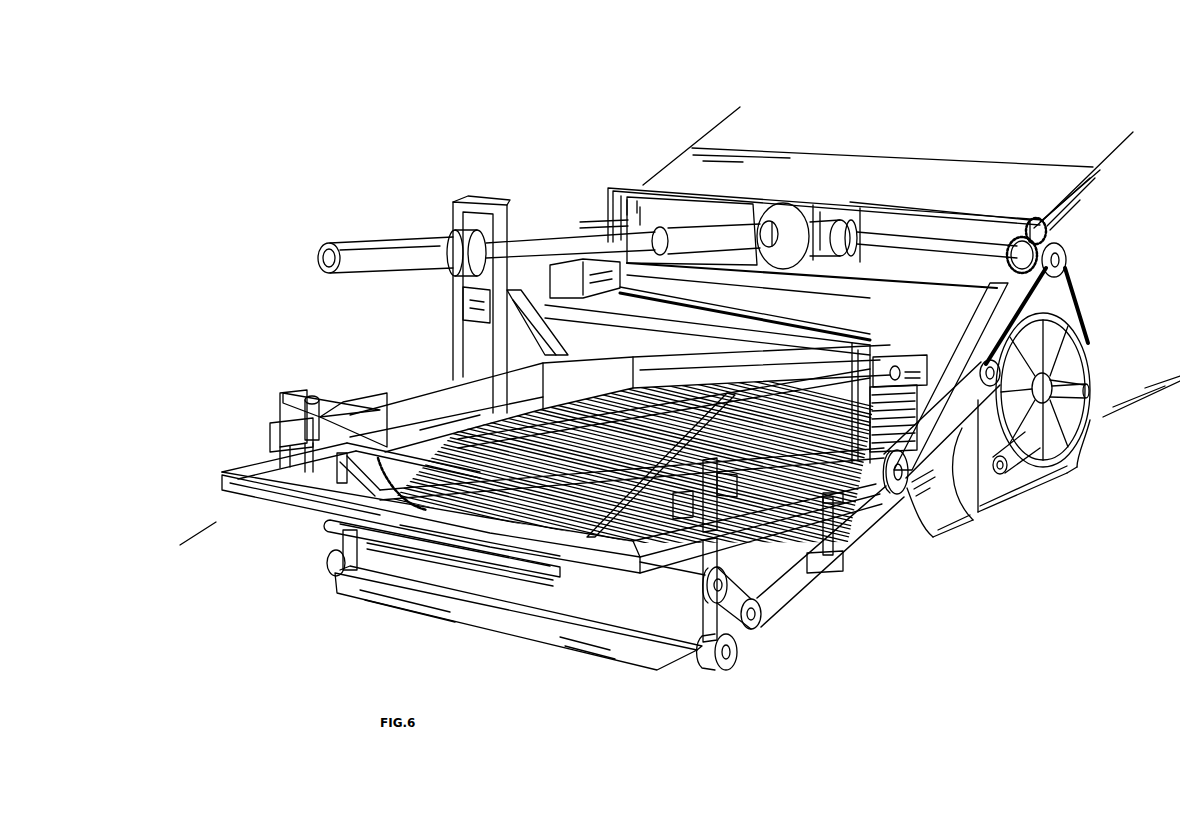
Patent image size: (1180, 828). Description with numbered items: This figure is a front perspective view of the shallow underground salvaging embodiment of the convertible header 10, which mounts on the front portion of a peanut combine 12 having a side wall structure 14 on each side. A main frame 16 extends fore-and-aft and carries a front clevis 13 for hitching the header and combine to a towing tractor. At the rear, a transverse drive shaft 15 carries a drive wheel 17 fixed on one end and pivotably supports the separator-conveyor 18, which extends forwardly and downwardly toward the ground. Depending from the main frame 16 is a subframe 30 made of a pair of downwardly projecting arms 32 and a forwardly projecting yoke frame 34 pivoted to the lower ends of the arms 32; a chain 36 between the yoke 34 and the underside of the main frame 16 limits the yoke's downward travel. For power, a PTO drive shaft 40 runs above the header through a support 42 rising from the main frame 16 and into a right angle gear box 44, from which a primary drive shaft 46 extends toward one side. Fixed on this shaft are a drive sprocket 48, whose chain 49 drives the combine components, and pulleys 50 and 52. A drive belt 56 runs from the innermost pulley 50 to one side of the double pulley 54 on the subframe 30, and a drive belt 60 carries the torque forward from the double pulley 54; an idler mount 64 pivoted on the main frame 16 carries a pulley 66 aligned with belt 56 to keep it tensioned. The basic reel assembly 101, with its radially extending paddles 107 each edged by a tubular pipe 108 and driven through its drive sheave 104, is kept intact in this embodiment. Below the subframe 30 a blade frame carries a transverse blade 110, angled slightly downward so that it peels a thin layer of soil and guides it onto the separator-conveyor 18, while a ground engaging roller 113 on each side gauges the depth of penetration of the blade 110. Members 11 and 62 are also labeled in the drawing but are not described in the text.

The convertible header 10 is at (308, 316).
The frame member 11 is at (700, 620).
The peanut combine 12 is at (630, 126).
The front clevis 13 is at (345, 402).
The side wall structure 14 is at (1071, 384).
The drive shaft 15 is at (1092, 392).
The main frame 16 is at (620, 371).
The drive wheel 17 is at (1084, 364).
The separator-conveyor 18 is at (462, 568).
The subframe 30 is at (216, 522).
The downwardly projecting arms 32 is at (855, 378).
The yoke frame 34 is at (221, 482).
The chain 36 is at (382, 466).
The PTO drive shaft 40 is at (528, 243).
The support 42 is at (462, 341).
The right angle gear box 44 is at (806, 212).
The primary drive shaft 46 is at (928, 246).
The drive sprocket 48 is at (1044, 232).
The chain 49 is at (1060, 225).
The pulley 50 is at (1050, 240).
The pulley 52 is at (1064, 265).
The double pulley 54 is at (910, 478).
The drive belt 56 is at (928, 446).
The drive belt 60 is at (790, 586).
The belt 62 is at (1083, 310).
The idler mount 64 is at (980, 298).
The pulley 66 is at (1002, 365).
The basic reel assembly 101 is at (580, 606).
The drive sheave 104 is at (770, 614).
The paddles 107 is at (676, 590).
The tubular pipe 108 is at (652, 612).
The transverse blade 110 is at (618, 646).
The ground engaging roller 113 is at (329, 563).